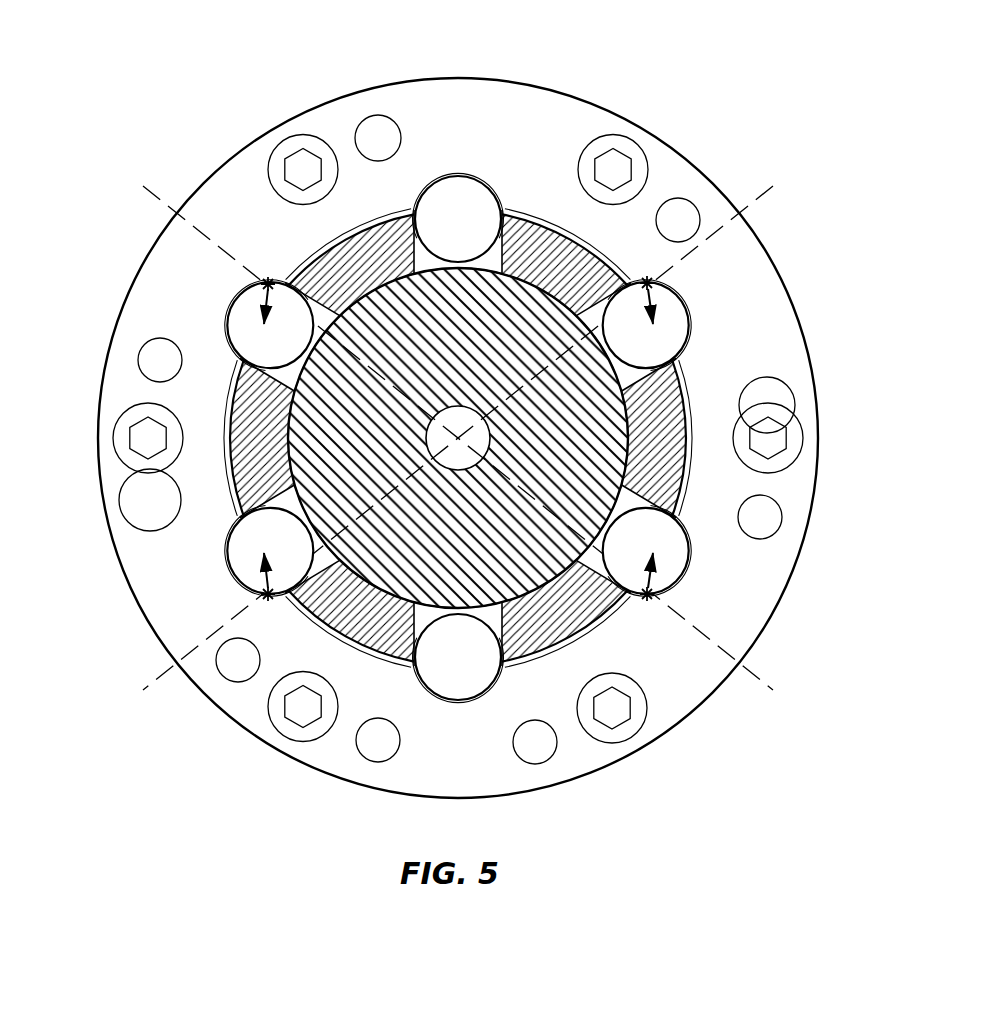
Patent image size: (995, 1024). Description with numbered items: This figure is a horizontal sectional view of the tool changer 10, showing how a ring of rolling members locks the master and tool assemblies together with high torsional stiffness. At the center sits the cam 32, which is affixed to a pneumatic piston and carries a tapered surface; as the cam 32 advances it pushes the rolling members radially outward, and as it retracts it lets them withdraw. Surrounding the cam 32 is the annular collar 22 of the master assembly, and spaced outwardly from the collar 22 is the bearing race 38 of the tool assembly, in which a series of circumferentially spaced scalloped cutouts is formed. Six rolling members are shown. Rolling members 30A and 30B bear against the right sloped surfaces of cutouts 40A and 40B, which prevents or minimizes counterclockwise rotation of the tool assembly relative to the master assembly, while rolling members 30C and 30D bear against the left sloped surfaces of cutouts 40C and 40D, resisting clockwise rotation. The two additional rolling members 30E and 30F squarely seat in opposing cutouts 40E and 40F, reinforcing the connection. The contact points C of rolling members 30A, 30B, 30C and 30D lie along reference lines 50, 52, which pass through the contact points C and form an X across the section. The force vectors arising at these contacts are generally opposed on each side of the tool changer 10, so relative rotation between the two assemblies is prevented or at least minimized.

The tool changer 10 is at (748, 66).
The annular collar 22 is at (645, 440).
The cam 32 is at (520, 548).
The bearing race 38 is at (782, 274).
The reference line 50 is at (757, 196).
The reference line 52 is at (748, 672).
The rolling member 30A is at (250, 316).
The rolling member 30B is at (668, 540).
The rolling member 30C is at (652, 335).
The rolling member 30D is at (245, 553).
The rolling member 30E is at (446, 208).
The rolling member 30F is at (450, 673).
The cutout 40A is at (228, 348).
The cutout 40B is at (692, 528).
The cutout 40C is at (692, 348).
The cutout 40D is at (228, 527).
The cutout 40E is at (506, 192).
The cutout 40F is at (498, 694).
The contact point C is at (266, 284).